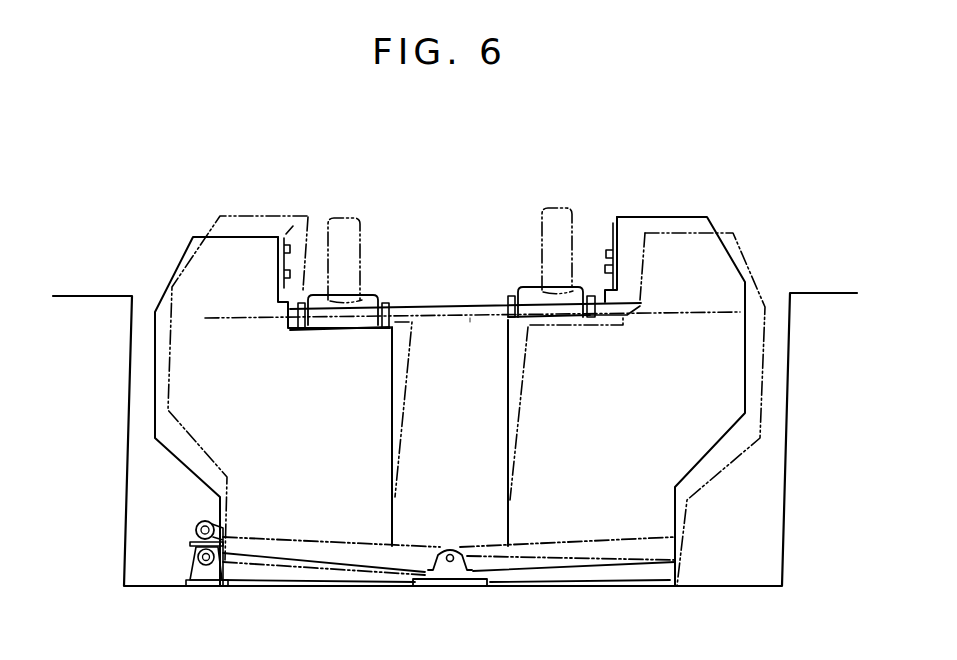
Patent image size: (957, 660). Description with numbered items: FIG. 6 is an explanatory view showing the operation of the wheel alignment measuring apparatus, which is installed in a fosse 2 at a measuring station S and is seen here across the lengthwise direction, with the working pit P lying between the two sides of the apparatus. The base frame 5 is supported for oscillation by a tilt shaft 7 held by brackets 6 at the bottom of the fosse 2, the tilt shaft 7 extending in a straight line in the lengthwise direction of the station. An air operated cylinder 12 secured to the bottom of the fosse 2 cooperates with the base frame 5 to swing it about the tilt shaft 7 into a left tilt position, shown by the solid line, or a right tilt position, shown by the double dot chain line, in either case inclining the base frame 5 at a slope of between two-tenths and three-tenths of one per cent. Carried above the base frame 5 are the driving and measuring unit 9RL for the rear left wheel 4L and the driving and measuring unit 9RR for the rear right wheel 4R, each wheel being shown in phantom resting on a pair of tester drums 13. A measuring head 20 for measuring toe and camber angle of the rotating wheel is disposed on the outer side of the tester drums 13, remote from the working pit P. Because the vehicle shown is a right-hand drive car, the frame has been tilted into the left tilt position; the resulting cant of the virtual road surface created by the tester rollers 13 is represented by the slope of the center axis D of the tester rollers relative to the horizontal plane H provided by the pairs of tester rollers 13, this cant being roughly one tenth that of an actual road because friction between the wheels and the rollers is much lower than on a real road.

The fosse 2 is at (746, 537).
The left wheel 4L is at (365, 230).
The right wheel 4R is at (548, 200).
The base frame 5 is at (600, 567).
The bracket 6 is at (430, 588).
The tilt shaft 7 is at (452, 584).
The driving and measuring unit for rear left wheel 9RL is at (190, 219).
The driving and measuring unit for rear right wheel 9RR is at (755, 218).
The air operated cylinder 12 is at (192, 548).
The tester drum 13 is at (368, 296).
The measuring head 20 is at (304, 222).
The measuring station S is at (462, 237).
The center axis of tester roller D is at (472, 289).
The horizontal plane H is at (473, 318).
The working pit P is at (462, 467).